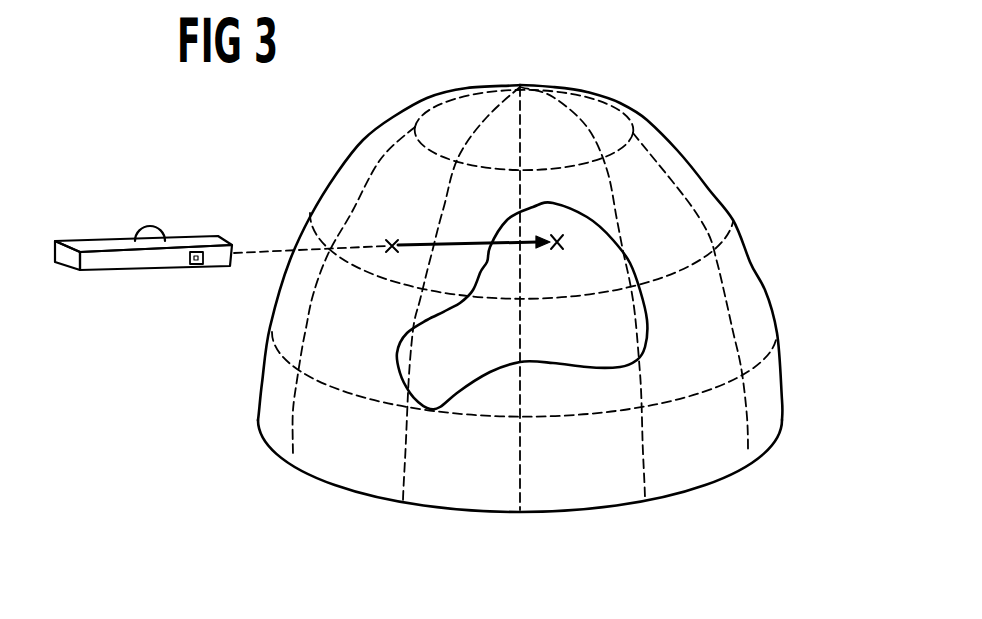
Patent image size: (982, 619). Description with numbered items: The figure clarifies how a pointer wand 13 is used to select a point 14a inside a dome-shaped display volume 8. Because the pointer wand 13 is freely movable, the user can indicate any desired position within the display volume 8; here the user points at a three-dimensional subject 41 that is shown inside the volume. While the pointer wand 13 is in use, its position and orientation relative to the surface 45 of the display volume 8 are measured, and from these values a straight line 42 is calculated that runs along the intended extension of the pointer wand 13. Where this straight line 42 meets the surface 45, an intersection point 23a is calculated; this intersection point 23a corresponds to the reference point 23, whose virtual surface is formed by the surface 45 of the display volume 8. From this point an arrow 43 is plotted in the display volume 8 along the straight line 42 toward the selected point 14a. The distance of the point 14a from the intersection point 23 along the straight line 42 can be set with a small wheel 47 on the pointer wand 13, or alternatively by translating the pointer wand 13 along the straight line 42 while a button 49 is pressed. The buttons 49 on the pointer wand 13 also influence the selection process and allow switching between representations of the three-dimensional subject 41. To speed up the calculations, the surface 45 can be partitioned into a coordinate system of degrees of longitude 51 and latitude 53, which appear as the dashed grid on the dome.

The display volume 8 is at (548, 298).
The pointer wand 13 is at (143, 244).
The small wheel 47 is at (165, 235).
The button 49 is at (195, 267).
The straight line 42 is at (262, 248).
The arrow 43 is at (463, 240).
The reference point 23 is at (358, 291).
The intersection point 23a is at (392, 255).
The point 14a is at (558, 247).
The 3D subject 41 is at (650, 322).
The surface 45 is at (750, 266).
The degrees of latitude 53 is at (745, 366).
The degrees of longitude 51 is at (750, 416).